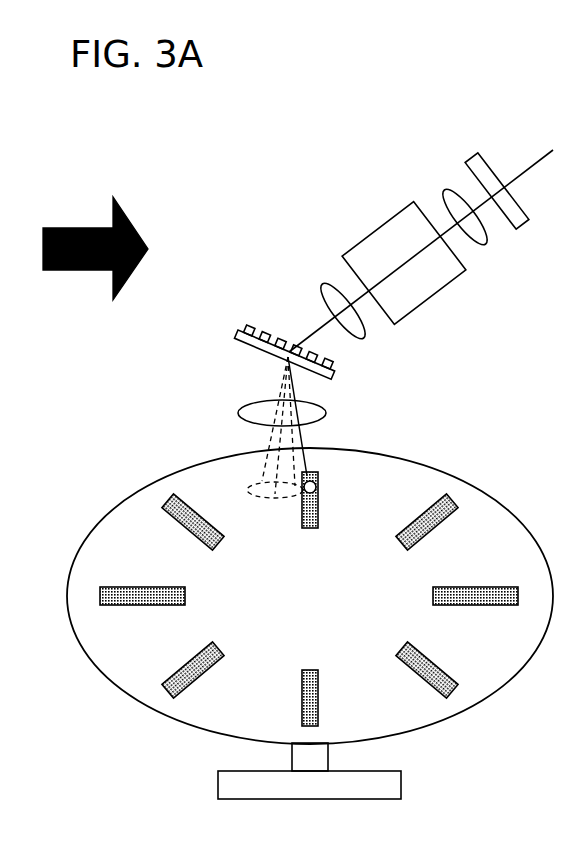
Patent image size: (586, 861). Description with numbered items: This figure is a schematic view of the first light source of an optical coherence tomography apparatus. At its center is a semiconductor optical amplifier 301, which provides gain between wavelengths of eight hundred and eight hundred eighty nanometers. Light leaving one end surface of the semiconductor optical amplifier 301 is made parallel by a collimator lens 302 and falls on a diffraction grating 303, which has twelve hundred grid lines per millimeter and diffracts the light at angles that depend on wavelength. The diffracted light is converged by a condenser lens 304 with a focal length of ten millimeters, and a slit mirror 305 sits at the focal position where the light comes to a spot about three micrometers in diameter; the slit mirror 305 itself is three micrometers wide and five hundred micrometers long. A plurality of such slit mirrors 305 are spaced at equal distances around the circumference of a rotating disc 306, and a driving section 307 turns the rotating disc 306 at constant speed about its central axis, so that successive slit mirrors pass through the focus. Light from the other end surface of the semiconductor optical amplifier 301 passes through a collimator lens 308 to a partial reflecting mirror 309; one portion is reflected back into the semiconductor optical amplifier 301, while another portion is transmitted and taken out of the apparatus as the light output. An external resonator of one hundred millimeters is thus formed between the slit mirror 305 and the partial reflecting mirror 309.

The semiconductor optical amplifier 301 is at (377, 230).
The collimator lens 302 is at (323, 280).
The diffraction grating 303 is at (333, 381).
The condenser lens 304 is at (238, 411).
The slit mirror 305 is at (318, 515).
The rotating disc 306 is at (467, 710).
The driving section 307 is at (217, 775).
The collimator lens 308 is at (447, 188).
The partial reflecting mirror 309 is at (475, 153).